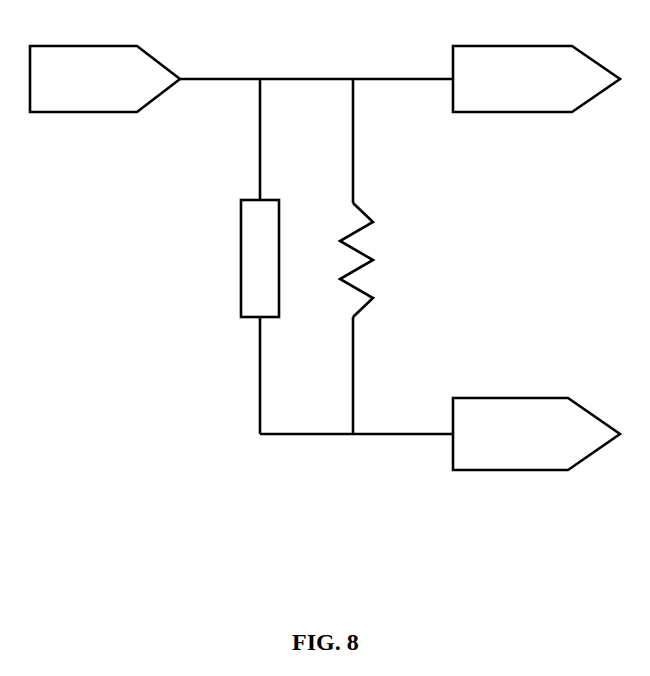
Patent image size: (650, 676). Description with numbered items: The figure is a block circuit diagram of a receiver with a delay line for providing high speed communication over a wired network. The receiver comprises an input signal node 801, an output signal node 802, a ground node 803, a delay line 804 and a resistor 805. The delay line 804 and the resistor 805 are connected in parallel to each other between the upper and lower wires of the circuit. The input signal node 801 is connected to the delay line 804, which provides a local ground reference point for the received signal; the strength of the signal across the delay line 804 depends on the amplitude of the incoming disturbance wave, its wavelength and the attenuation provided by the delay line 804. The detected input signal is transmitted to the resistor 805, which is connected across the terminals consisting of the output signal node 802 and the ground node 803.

The input signal node (Rx_in) 801 is at (65, 113).
The output signal node (Rx_out) 802 is at (519, 113).
The ground node (Rx_Vss) 803 is at (512, 470).
The delay line (D1) 804 is at (242, 263).
The resistor (R1) 805 is at (363, 265).